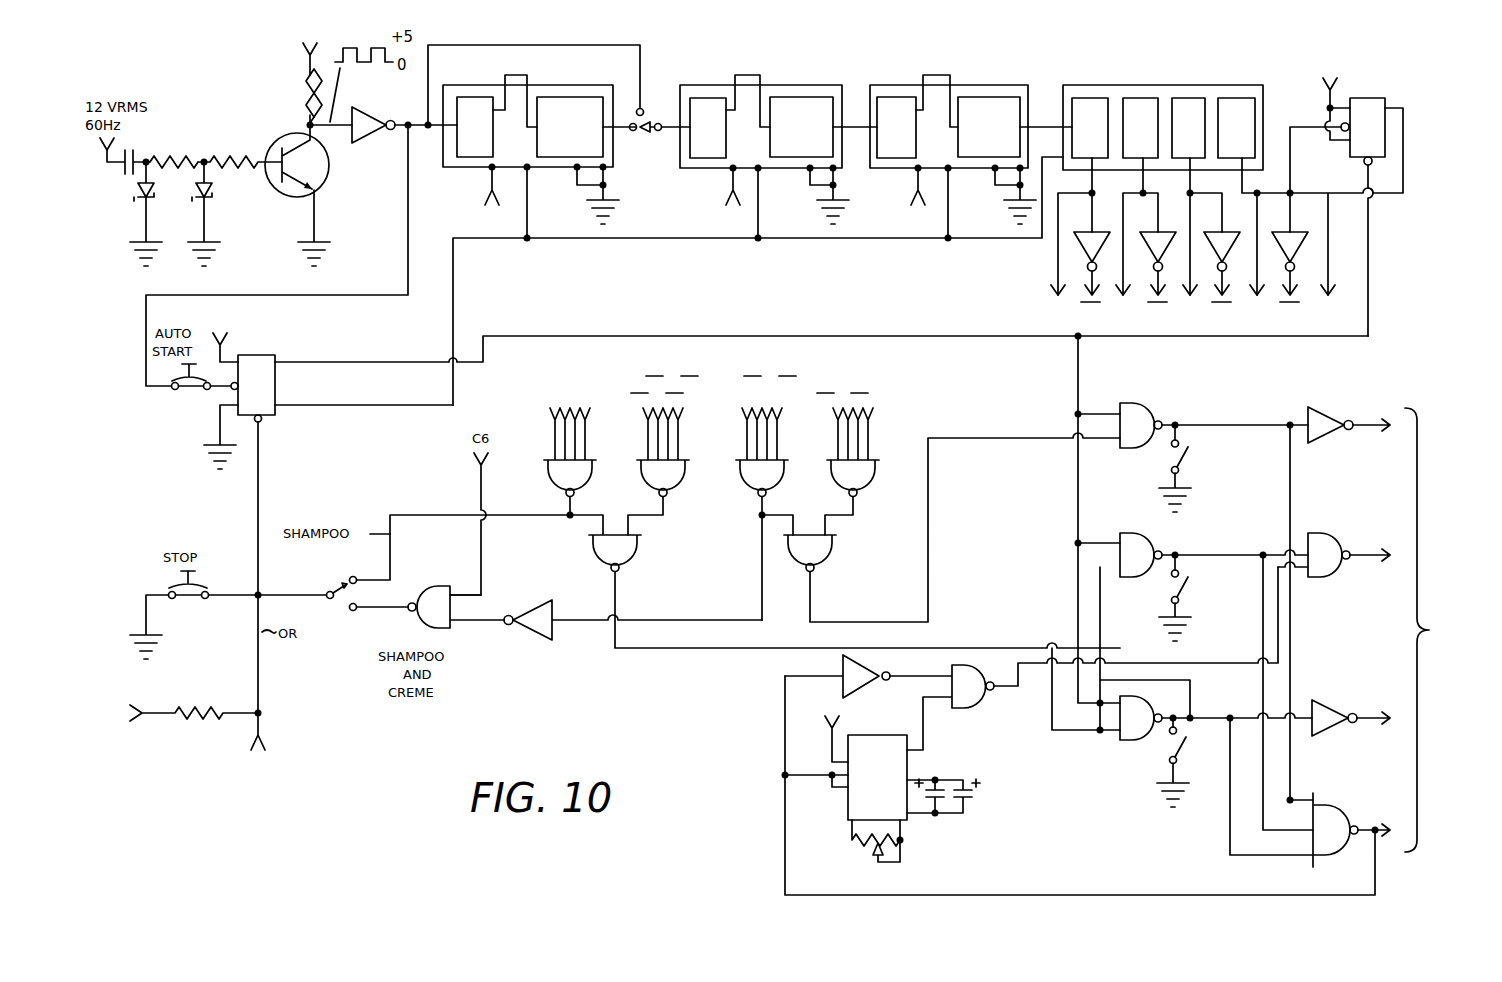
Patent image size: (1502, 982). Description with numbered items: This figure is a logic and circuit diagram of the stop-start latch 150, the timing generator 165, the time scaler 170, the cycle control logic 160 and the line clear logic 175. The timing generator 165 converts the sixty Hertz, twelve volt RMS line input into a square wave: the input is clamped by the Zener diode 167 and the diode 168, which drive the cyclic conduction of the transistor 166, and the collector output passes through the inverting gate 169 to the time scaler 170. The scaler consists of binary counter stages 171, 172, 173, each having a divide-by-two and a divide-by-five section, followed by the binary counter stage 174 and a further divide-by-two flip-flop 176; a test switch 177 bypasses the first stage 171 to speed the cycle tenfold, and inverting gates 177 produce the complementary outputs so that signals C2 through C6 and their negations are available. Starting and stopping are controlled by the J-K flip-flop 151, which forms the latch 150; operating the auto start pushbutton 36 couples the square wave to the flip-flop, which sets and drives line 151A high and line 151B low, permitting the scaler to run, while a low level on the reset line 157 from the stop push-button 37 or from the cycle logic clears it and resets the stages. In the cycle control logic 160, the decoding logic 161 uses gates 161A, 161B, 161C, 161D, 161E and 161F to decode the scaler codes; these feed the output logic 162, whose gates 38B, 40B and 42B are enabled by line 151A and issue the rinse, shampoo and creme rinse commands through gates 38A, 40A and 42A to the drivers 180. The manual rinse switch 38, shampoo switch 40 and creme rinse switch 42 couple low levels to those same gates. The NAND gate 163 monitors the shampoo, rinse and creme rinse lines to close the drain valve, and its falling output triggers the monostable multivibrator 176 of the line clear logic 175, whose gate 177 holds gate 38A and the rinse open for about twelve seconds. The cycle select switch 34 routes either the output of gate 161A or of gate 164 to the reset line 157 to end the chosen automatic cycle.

The cycle select switch 34 is at (345, 605).
The auto start pushbutton 36 is at (186, 392).
The stop push-button 37 is at (188, 596).
The rinse switch 38 is at (1186, 591).
The rinse gate 38A is at (1325, 543).
The rinse control gate 38B is at (1150, 528).
The shampoo switch 40 is at (1186, 460).
The shampoo gate 40A is at (1322, 418).
The shampoo control gate 40B is at (1136, 426).
The creme rinse switch 42 is at (1183, 750).
The creme rinse gate 42A is at (1322, 714).
The creme rinse control gate 42B is at (1128, 745).
The stop-start latch 150 is at (314, 330).
The flip-flop 151 is at (268, 398).
The line 151A is at (821, 340).
The line 151B is at (587, 312).
The reset line 157 is at (262, 665).
The cycle control logic 160 is at (987, 418).
The decoding logic 161 is at (720, 558).
The gate 161A is at (569, 446).
The gate 161B is at (663, 455).
The gate 161C is at (844, 580).
The gate 161D is at (763, 498).
The gate 161E is at (849, 456).
The gate 161F is at (952, 527).
The output logic 162 is at (1232, 524).
The NAND gate 163 is at (1332, 814).
The gate 164 is at (442, 626).
The timing generator 165 is at (268, 121).
The transistor 166 is at (322, 170).
The Zener diode 167 is at (206, 194).
The diode 168 is at (140, 194).
The inverting gate 169 is at (370, 110).
The time scaler 170 is at (863, 47).
The binary counter stage 171 is at (540, 88).
The binary counter stage 172 is at (778, 88).
The binary counter stage 173 is at (975, 88).
The binary counter stage 174 is at (1138, 88).
The line clear logic 175 is at (780, 810).
The flip-flop / monostable multivibrator 176 is at (1370, 100).
The switch / inverting gates 177 is at (648, 118).
The drivers 180 is at (1446, 630).